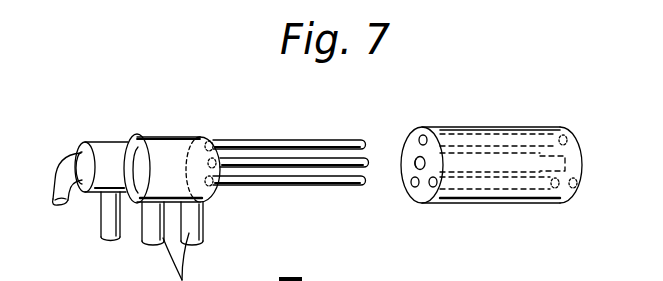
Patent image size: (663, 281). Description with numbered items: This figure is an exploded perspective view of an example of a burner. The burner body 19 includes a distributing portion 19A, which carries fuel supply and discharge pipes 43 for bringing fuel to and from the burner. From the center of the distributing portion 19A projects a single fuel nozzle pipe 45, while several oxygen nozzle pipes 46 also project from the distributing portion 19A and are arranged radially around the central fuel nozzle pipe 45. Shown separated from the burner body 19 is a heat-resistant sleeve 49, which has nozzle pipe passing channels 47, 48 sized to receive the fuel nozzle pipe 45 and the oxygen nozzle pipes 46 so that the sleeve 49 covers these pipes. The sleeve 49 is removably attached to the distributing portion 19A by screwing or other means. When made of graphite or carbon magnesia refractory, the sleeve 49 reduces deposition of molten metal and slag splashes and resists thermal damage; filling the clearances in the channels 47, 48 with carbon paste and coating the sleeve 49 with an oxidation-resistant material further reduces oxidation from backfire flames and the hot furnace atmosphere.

The burner body 19 is at (188, 123).
The distributing portion 19A is at (153, 138).
The fuel supply and discharge pipes 43 is at (107, 224).
The fuel nozzle pipe 45 is at (243, 166).
The oxygen nozzle pipes 46 is at (325, 181).
The nozzle pipe passing channel 47 is at (416, 165).
The nozzle pipe passing channels 48 is at (436, 180).
The heat-resistant sleeve 49 is at (540, 128).